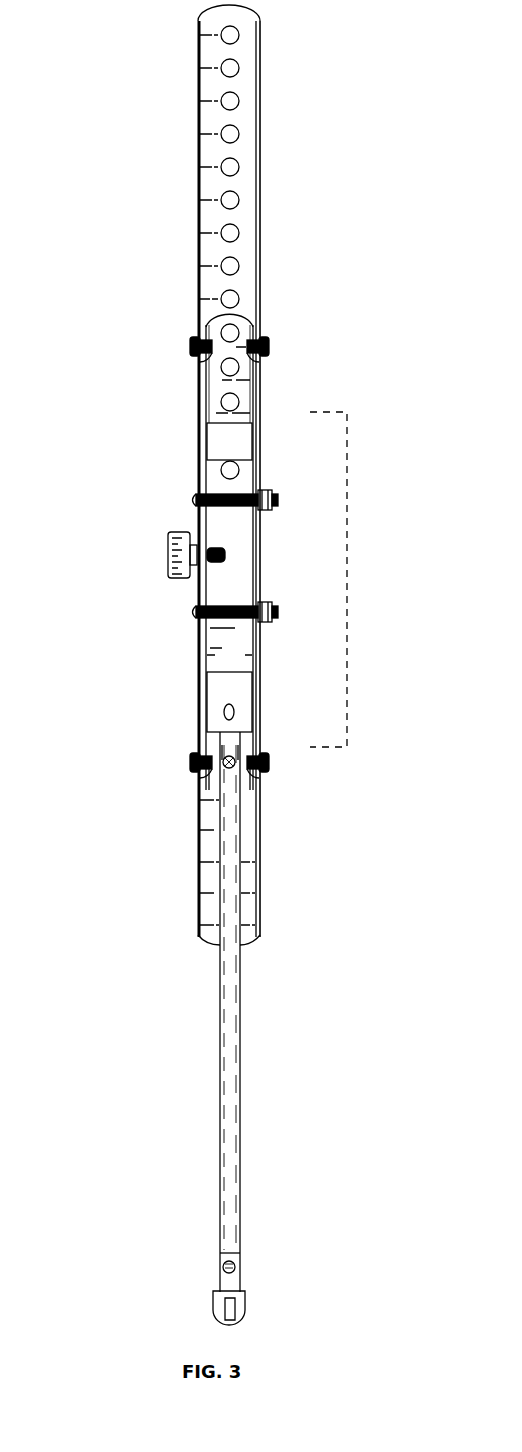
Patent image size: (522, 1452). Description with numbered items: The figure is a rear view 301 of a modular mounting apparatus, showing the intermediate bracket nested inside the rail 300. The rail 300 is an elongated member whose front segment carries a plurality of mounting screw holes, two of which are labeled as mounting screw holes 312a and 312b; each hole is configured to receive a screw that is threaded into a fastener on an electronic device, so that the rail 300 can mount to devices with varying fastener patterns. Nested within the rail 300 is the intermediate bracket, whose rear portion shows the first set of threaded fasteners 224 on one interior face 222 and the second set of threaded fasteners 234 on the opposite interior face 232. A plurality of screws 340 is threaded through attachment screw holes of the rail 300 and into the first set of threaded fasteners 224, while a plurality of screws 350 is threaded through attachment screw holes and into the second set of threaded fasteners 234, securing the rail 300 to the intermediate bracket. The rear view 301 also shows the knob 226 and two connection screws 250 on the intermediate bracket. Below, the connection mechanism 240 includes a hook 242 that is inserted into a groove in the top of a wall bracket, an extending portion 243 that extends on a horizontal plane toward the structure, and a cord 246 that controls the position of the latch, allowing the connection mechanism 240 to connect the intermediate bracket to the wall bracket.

The rear view 301 is at (102, 91).
The rail 300 is at (262, 132).
The mounting screw hole 312a is at (219, 42).
The mounting screw hole 312b is at (219, 78).
The first set of threaded fasteners 224 is at (206, 378).
The second set of threaded fasteners 234 is at (253, 378).
The plurality of screws 340 is at (190, 345).
The plurality of screws 350 is at (269, 345).
The hook 242 is at (235, 445).
The extending portion 243 is at (232, 692).
The connection mechanism 240 is at (347, 522).
The interior face 222 is at (206, 484).
The interior face 232 is at (249, 638).
The connection screws 250 is at (231, 510).
The knob 226 is at (172, 580).
The cord 246 is at (240, 1100).